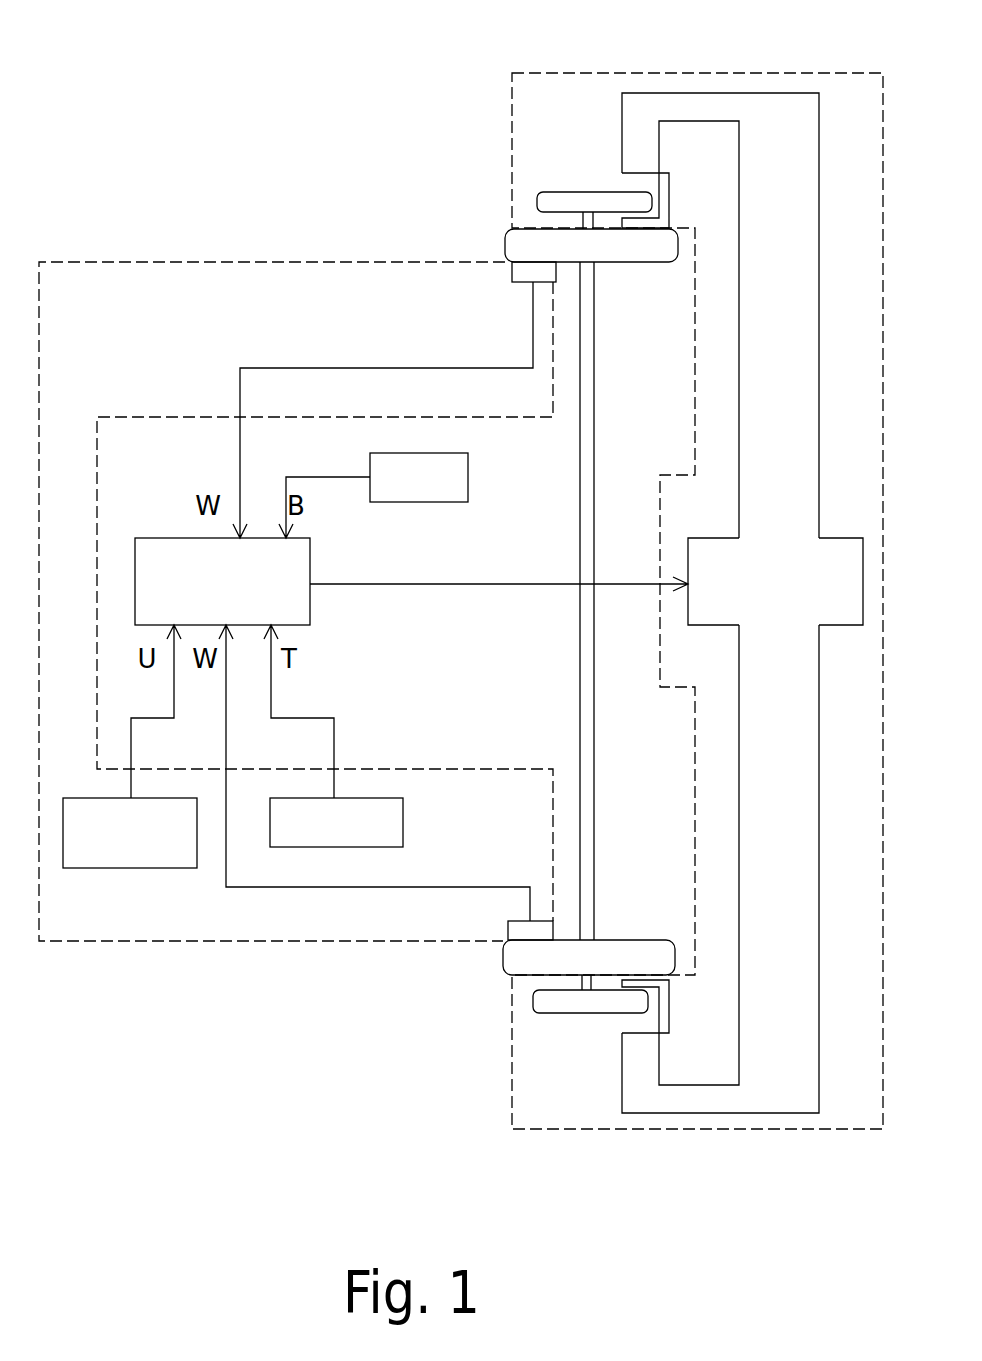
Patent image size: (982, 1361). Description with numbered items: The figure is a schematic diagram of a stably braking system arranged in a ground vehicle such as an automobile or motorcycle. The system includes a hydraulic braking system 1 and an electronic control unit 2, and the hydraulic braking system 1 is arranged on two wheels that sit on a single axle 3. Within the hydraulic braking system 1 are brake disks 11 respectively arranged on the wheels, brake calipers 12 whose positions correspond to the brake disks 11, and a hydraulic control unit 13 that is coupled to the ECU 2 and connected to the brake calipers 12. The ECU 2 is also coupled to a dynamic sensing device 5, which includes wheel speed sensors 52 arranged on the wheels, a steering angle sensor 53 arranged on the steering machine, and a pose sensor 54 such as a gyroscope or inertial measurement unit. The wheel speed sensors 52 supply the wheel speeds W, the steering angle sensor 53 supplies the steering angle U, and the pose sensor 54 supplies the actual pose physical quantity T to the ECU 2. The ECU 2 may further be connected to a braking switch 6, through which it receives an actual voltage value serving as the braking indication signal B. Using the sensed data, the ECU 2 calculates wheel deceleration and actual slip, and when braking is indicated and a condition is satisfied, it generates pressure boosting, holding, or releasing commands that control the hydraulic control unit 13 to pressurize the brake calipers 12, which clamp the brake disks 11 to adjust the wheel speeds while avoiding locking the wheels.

The hydraulic braking system 1 is at (578, 73).
The brake disks 11 is at (537, 203).
The brake calipers 12 is at (622, 173).
The hydraulic control unit (HCU) 13 is at (800, 93).
The electronic control unit (ECU) 2 is at (310, 545).
The axle 3 is at (579, 642).
The dynamic sensing device 5 is at (77, 262).
The wheel speed sensors 52 is at (512, 282).
The steering angle sensor 53 is at (100, 868).
The pose sensor 54 is at (403, 806).
The braking switch 6 is at (468, 465).